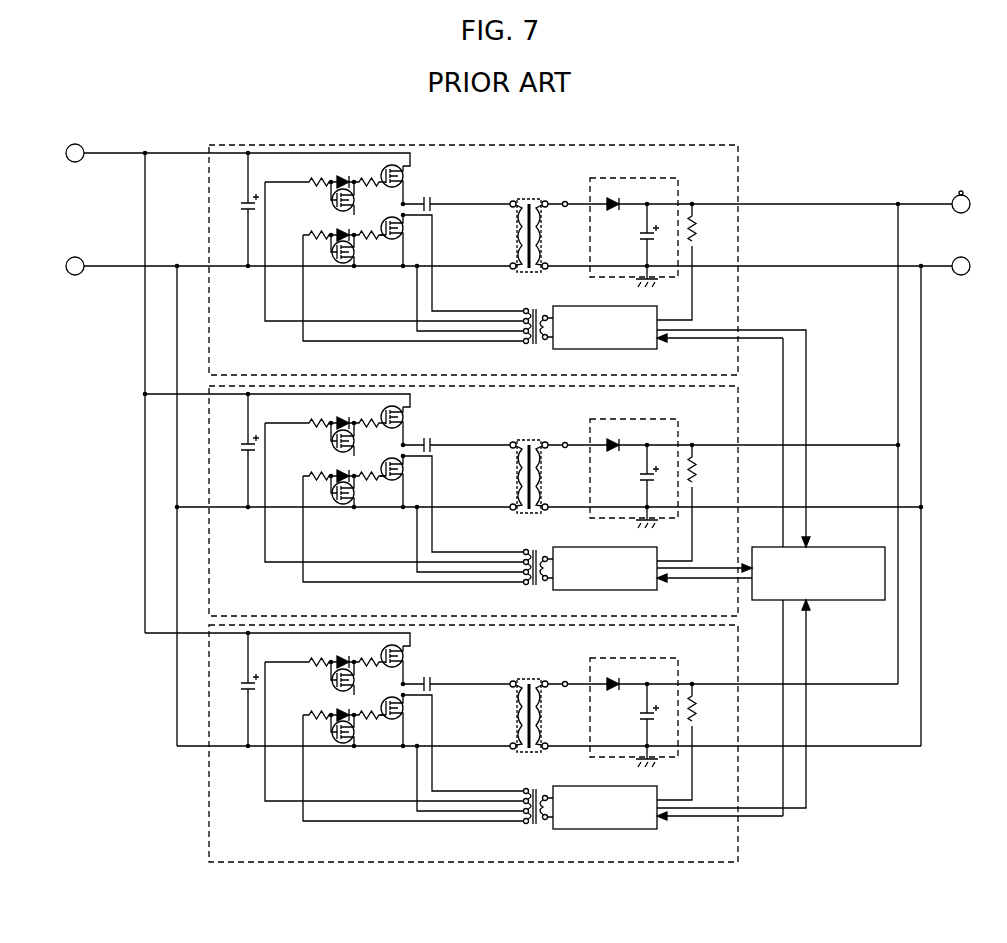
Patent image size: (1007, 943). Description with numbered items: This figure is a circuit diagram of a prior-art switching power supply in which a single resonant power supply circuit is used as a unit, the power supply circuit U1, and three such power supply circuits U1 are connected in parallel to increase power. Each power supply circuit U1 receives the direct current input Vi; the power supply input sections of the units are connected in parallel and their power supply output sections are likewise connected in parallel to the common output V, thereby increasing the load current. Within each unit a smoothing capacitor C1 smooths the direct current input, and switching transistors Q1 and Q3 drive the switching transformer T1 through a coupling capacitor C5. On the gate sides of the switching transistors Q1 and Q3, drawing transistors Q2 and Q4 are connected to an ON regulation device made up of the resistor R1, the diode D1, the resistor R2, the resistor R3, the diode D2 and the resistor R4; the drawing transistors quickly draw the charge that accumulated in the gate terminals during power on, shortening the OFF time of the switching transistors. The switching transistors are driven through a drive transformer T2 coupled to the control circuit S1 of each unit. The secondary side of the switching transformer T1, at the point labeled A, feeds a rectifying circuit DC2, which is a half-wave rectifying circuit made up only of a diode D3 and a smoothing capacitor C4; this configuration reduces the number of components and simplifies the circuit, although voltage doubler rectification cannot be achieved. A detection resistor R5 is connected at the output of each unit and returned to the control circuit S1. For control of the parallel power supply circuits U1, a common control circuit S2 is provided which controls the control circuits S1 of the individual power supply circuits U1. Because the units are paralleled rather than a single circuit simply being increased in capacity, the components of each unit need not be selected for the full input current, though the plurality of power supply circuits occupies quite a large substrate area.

The direct current input Vi is at (63, 203).
The output voltage terminals V is at (972, 224).
The power supply circuit U1 is at (746, 175).
The smoothing capacitor C1 is at (241, 449).
The resistor R1 is at (298, 415).
The diode D1 is at (342, 416).
The resistor R2 is at (370, 415).
The switching transistor Q1 is at (402, 424).
The drawing transistor Q2 is at (354, 436).
The switching transistor Q3 is at (399, 480).
The drawing transistor Q4 is at (351, 491).
The resistor R3 is at (317, 468).
The diode D2 is at (342, 469).
The resistor R4 is at (370, 468).
The coupling capacitor C5 is at (433, 434).
The switching transformer T1 is at (529, 467).
The node A is at (565, 436).
The diode D3 is at (613, 436).
The smoothing capacitor C4 is at (654, 485).
The rectifying circuit DC2 is at (637, 176).
The detection resistor R5 is at (702, 462).
The control circuit S1 is at (655, 349).
The drive transformer T2 is at (536, 558).
The control circuit S2 is at (838, 600).